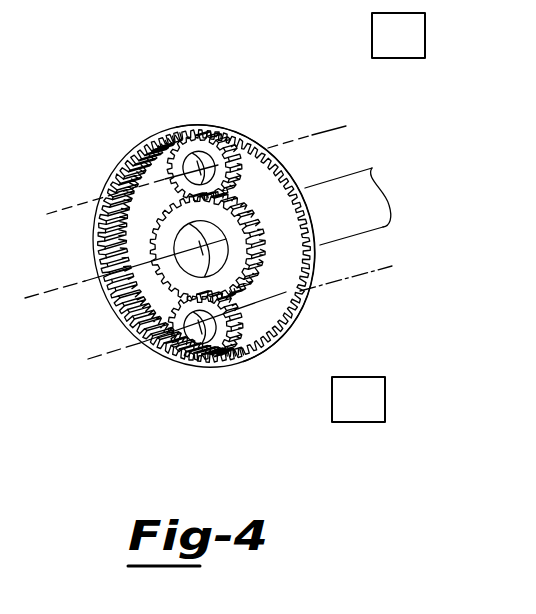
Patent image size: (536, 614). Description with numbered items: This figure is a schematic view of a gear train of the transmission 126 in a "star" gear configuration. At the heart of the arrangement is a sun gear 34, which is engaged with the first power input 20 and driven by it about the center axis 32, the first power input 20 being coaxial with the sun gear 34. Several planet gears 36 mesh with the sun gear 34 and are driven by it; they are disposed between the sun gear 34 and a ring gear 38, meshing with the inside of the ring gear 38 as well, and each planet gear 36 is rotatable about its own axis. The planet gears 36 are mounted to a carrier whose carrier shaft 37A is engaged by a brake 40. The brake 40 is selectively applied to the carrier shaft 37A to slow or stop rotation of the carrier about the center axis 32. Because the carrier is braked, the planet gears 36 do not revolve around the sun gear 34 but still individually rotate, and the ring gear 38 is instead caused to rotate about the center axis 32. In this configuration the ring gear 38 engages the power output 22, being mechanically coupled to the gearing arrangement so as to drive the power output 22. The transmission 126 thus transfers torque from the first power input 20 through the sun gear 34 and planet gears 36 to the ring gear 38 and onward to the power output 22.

The first power input 20 is at (351, 161).
The power output 22 is at (284, 334).
The center axis 32 is at (50, 294).
The sun gear 34 is at (234, 256).
The planet gears 36 is at (169, 131).
The carrier shaft 37A is at (311, 129).
The ring gear 38 is at (116, 158).
The brake 40 is at (338, 130).
The transmission 126 is at (218, 112).